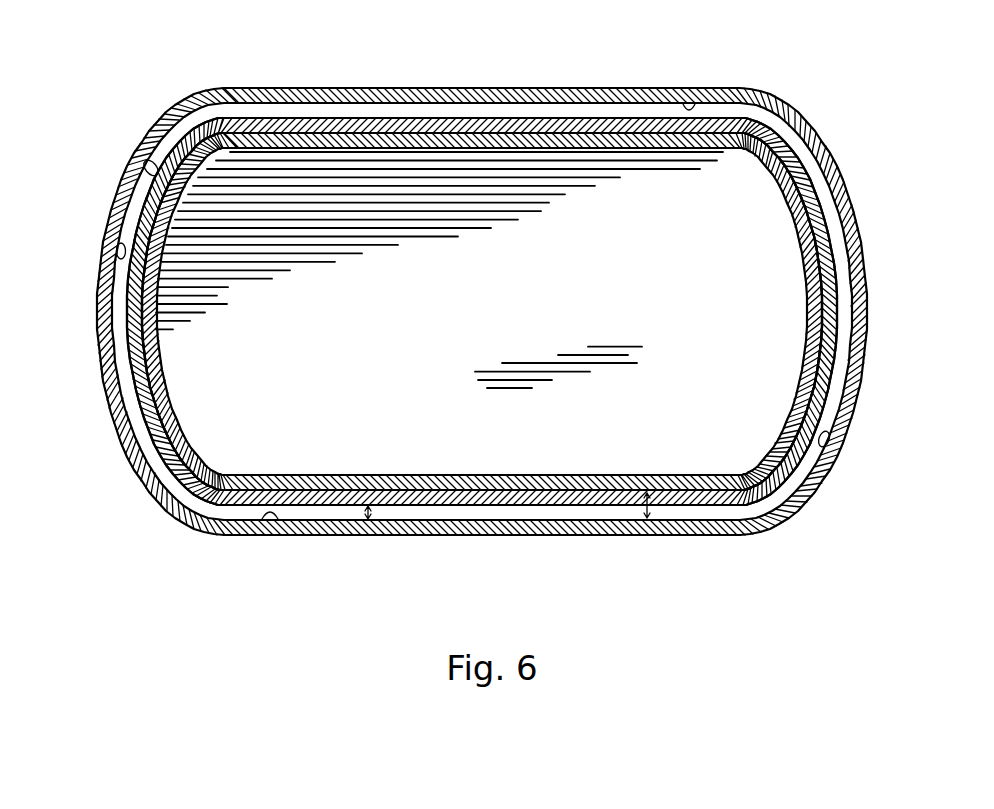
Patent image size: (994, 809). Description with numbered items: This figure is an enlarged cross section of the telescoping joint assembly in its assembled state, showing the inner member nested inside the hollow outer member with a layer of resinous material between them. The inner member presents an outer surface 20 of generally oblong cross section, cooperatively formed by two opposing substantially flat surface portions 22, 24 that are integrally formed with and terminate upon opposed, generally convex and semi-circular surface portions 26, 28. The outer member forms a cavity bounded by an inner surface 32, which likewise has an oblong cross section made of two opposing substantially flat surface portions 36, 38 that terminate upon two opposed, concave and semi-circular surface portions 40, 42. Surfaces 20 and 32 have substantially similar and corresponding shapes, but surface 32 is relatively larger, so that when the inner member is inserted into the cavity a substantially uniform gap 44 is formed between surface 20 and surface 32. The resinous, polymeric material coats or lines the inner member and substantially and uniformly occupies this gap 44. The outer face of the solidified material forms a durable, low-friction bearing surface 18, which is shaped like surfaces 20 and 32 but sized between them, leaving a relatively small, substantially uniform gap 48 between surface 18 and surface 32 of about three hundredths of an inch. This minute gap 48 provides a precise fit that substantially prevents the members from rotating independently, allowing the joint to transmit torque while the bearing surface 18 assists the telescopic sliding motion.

The bearing surface 18 is at (207, 528).
The outer surface 20 is at (167, 424).
The flat surface portion 22 is at (437, 133).
The flat surface portion 24 is at (500, 536).
The convex semi-circular surface portion 26 is at (133, 303).
The convex semi-circular surface portion 28 is at (822, 243).
The inner surface 32 is at (150, 156).
The flat surface portion 36 is at (678, 104).
The flat surface portion 38 is at (262, 521).
The concave semi-circular surface portion 40 is at (120, 244).
The concave semi-circular surface portion 42 is at (826, 446).
The gap 44 is at (649, 518).
The gap 48 is at (365, 517).